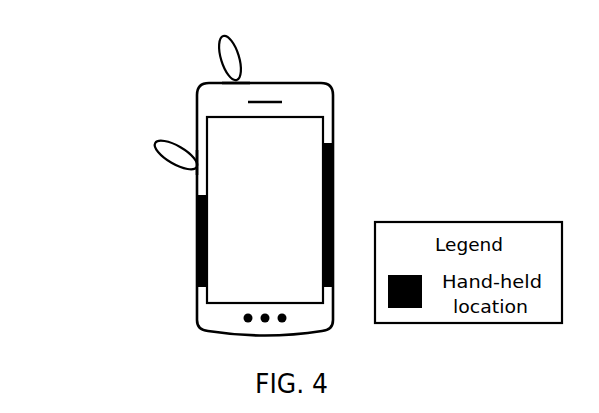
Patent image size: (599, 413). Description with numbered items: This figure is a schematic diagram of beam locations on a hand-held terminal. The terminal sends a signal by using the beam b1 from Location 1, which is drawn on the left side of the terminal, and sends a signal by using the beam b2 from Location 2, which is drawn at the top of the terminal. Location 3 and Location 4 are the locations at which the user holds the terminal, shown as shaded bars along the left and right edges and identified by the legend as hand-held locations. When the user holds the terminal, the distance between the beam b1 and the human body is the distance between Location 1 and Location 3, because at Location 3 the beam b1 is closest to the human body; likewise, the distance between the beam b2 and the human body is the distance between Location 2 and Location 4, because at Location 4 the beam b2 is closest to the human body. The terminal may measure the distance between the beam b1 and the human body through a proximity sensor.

The location 1 Location 1 is at (197, 162).
The location 2 Location 2 is at (235, 80).
The location 3 Location 3 is at (197, 196).
The location 4 Location 4 is at (333, 143).
The beam b1 is at (164, 154).
The beam b2 is at (228, 46).